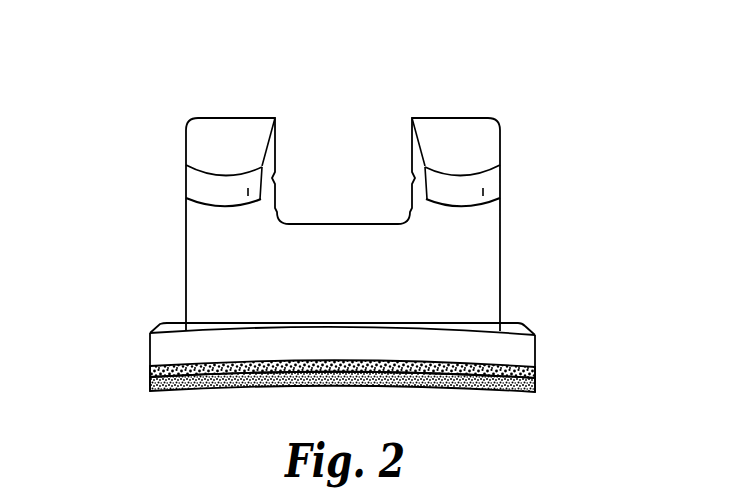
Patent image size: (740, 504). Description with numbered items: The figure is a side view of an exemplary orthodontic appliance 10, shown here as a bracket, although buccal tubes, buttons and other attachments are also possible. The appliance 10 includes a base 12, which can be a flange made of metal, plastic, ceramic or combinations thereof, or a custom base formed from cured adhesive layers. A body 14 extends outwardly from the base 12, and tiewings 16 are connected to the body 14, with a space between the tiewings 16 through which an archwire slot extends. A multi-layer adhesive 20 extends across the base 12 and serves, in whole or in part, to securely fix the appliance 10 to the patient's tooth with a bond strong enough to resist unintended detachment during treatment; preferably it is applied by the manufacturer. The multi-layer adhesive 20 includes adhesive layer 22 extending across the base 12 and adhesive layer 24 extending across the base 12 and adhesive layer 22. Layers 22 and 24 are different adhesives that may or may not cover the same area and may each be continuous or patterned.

The orthodontic appliance 10 is at (326, 105).
The base 12 is at (142, 343).
The body 14 is at (202, 280).
The tiewings 16 is at (197, 152).
The multi-layer adhesive 20 is at (542, 368).
The adhesive layer 22 is at (150, 378).
The adhesive layer 24 is at (210, 389).